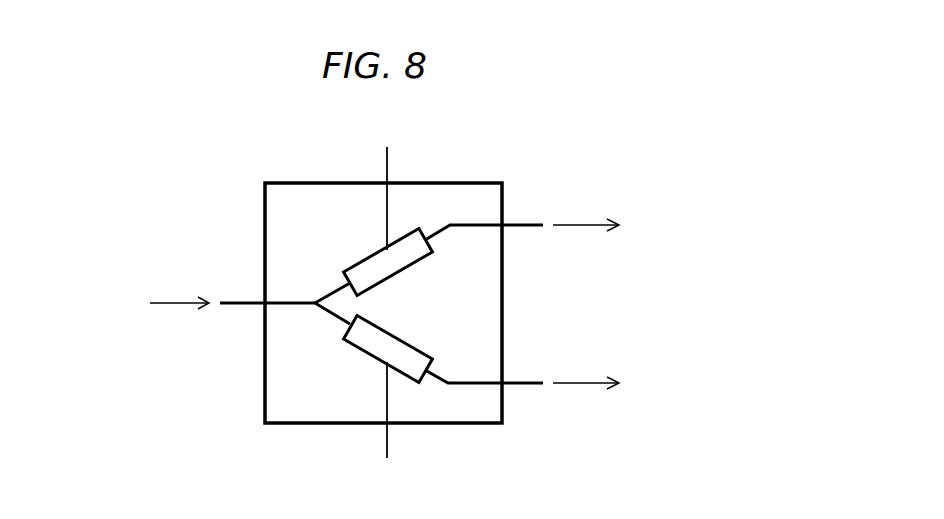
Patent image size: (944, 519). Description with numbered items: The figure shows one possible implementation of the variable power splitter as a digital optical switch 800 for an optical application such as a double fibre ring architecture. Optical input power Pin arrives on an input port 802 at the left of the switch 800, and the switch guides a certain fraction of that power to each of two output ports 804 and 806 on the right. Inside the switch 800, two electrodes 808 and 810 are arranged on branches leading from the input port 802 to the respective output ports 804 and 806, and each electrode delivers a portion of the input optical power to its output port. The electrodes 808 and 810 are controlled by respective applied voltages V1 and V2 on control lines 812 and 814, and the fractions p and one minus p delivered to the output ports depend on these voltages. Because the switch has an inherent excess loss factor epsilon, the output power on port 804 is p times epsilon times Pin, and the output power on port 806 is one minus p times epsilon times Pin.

The digital optical switch 800 is at (303, 183).
The input port 802 is at (238, 303).
The output port 804 is at (543, 225).
The output port 806 is at (533, 383).
The electrode 808 is at (412, 267).
The electrode 810 is at (412, 343).
The control line 812 is at (388, 158).
The control line 814 is at (388, 443).